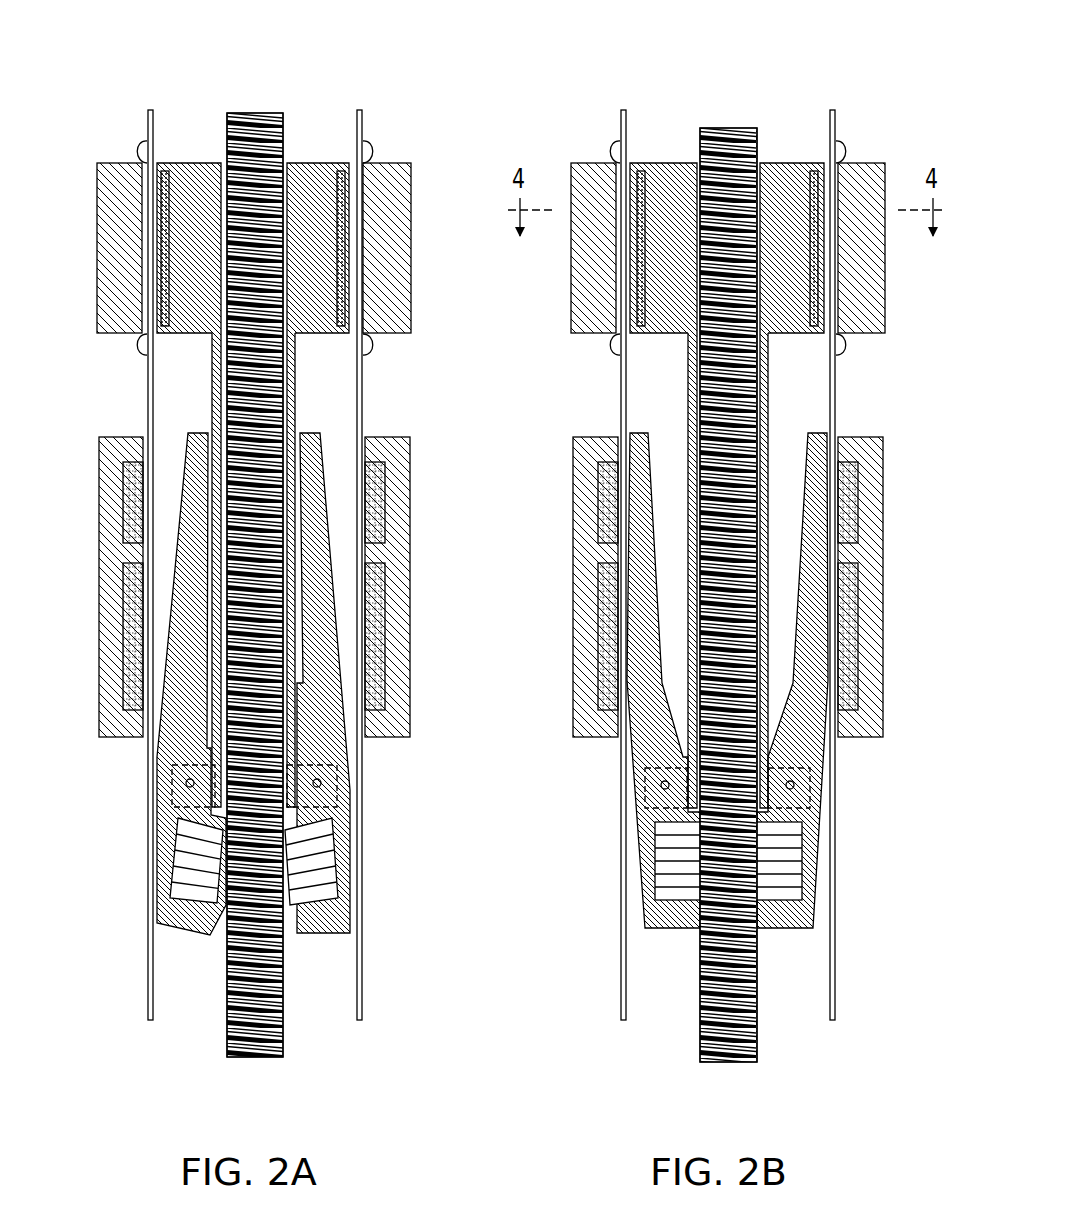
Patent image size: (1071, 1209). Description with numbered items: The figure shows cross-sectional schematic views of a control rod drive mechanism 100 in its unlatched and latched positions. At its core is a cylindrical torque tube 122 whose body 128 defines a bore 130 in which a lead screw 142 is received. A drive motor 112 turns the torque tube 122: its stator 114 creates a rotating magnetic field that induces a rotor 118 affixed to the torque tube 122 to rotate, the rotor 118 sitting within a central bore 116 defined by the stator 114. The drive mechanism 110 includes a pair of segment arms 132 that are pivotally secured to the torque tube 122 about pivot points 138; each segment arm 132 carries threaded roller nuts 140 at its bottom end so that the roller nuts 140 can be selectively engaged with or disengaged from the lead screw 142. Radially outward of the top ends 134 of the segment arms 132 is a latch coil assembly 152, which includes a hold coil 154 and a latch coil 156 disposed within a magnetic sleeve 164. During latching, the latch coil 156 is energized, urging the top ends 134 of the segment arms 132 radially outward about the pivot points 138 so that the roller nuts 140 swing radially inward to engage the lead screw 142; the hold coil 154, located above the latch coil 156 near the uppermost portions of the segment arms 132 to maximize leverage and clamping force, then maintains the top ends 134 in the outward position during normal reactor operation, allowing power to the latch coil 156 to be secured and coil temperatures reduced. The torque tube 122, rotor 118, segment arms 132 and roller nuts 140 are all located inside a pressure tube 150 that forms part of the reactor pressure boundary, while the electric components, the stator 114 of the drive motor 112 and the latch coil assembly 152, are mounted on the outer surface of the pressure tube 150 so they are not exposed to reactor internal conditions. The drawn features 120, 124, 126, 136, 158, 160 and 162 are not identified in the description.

In FIG. 2A, the control rod drive mechanism 100 is at (118, 80).
In FIG. 2B, the control rod drive mechanism 100 is at (895, 80).
In FIG. 2A, the drive mechanism 110 is at (82, 186).
In FIG. 2B, the drive mechanism 110 is at (896, 249).
In FIG. 2A, the drive motor 112 is at (371, 128).
In FIG. 2B, the drive motor 112 is at (615, 133).
In FIG. 2A, the stator 114 is at (118, 292).
In FIG. 2B, the stator 114 is at (785, 311).
In FIG. 2A, the central bore 116 is at (165, 178).
In FIG. 2B, the central bore 116 is at (631, 188).
In FIG. 2A, the rotor 118 is at (198, 305).
In FIG. 2B, the rotor 118 is at (843, 338).
In FIG. 2A, the second hub 120 is at (339, 180).
In FIG. 2B, the second hub 120 is at (815, 195).
In FIG. 2A, the torque tube 122 is at (212, 396).
In FIG. 2B, the torque tube 122 is at (767, 388).
In FIG. 2A, the gap 124 is at (306, 346).
In FIG. 2B, the gap 124 is at (672, 350).
In FIG. 2A, the carriage 126 is at (195, 752).
In FIG. 2B, the carriage 126 is at (678, 728).
In FIG. 2A, the body 128 is at (302, 695).
In FIG. 2B, the body 128 is at (688, 580).
In FIG. 2A, the bore 130 is at (283, 395).
In FIG. 2B, the bore 130 is at (697, 405).
In FIG. 2A, the segment arms 132 is at (345, 617).
In FIG. 2B, the segment arms 132 is at (637, 527).
In FIG. 2A, the top ends 134 is at (313, 458).
In FIG. 2B, the top ends 134 is at (628, 455).
In FIG. 2A, the first nut half 136 is at (342, 858).
In FIG. 2B, the first nut half 136 is at (648, 882).
In FIG. 2A, the pivot points 138 is at (322, 783).
In FIG. 2B, the pivot points 138 is at (662, 785).
In FIG. 2A, the roller nuts 140 is at (195, 878).
In FIG. 2B, the roller nuts 140 is at (780, 860).
In FIG. 2A, the lead screw 142 is at (285, 985).
In FIG. 2B, the lead screw 142 is at (700, 970).
In FIG. 2A, the pressure tube 150 is at (150, 992).
In FIG. 2B, the pressure tube 150 is at (835, 965).
In FIG. 2A, the latch coil assembly 152 is at (420, 529).
In FIG. 2B, the latch coil assembly 152 is at (558, 654).
In FIG. 2A, the hold coil 154 is at (130, 525).
In FIG. 2B, the hold coil 154 is at (853, 500).
In FIG. 2A, the latch coil 156 is at (135, 700).
In FIG. 2B, the latch coil 156 is at (853, 632).
In FIG. 2A, the stator housing 158 is at (112, 458).
In FIG. 2B, the stator housing 158 is at (850, 448).
In FIG. 2A, the coil 160 is at (130, 565).
In FIG. 2B, the coil 160 is at (853, 550).
In FIG. 2A, the stator lower end 162 is at (140, 737).
In FIG. 2B, the stator lower end 162 is at (855, 730).
In FIG. 2A, the magnetic sleeve 164 is at (130, 655).
In FIG. 2B, the magnetic sleeve 164 is at (853, 600).